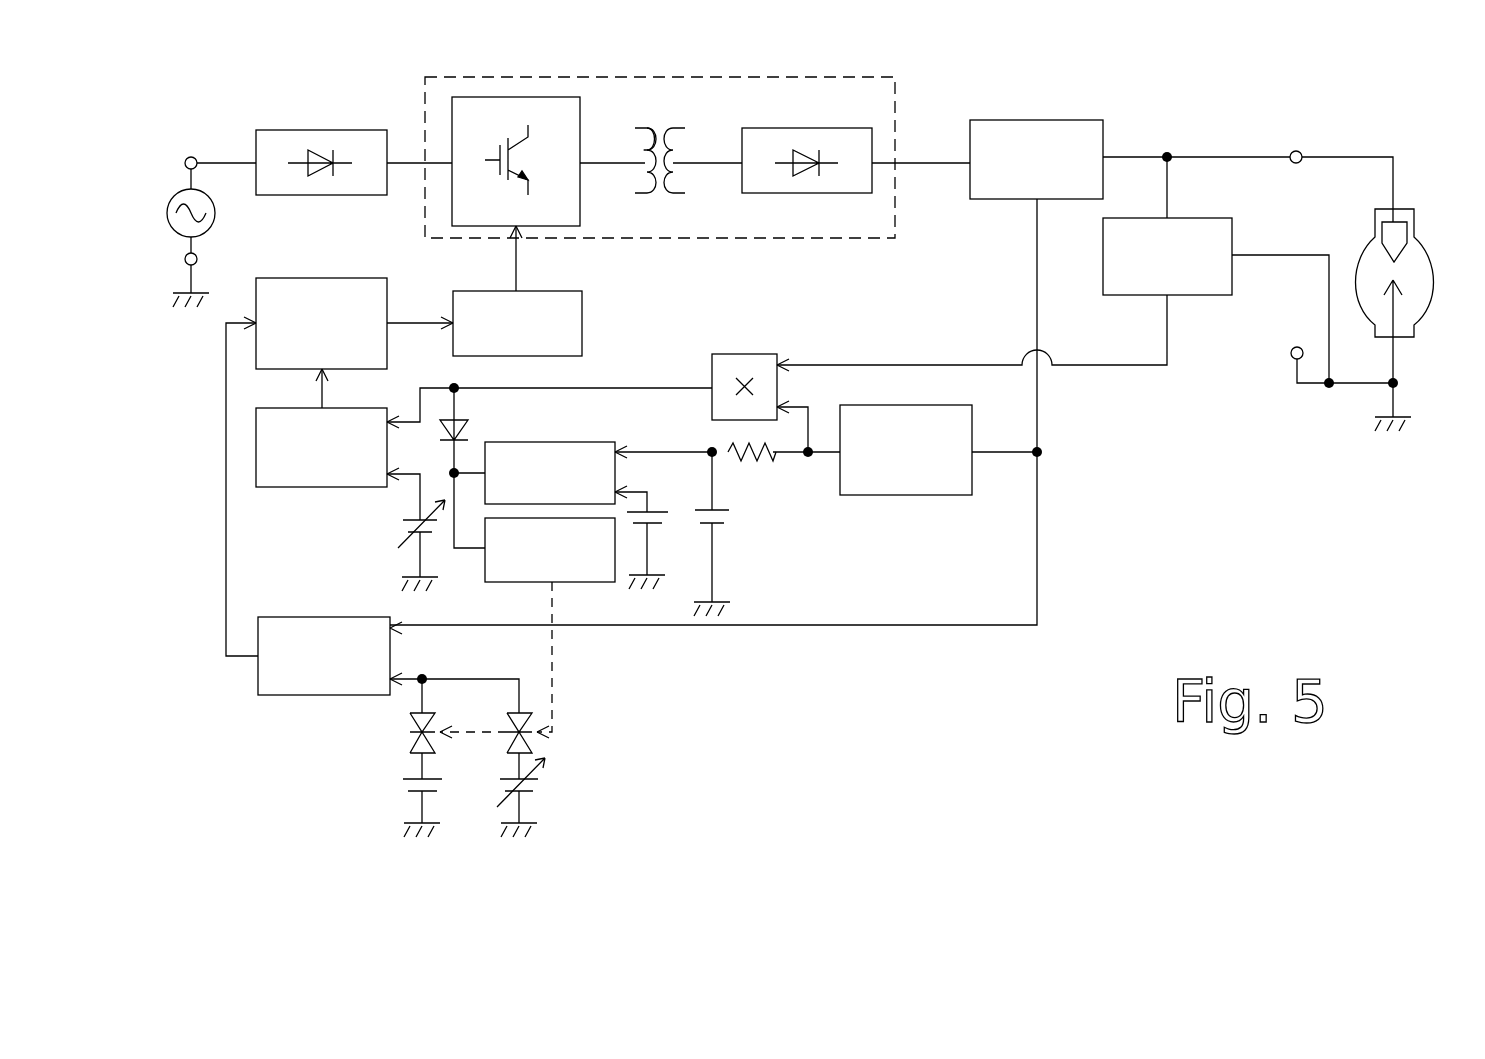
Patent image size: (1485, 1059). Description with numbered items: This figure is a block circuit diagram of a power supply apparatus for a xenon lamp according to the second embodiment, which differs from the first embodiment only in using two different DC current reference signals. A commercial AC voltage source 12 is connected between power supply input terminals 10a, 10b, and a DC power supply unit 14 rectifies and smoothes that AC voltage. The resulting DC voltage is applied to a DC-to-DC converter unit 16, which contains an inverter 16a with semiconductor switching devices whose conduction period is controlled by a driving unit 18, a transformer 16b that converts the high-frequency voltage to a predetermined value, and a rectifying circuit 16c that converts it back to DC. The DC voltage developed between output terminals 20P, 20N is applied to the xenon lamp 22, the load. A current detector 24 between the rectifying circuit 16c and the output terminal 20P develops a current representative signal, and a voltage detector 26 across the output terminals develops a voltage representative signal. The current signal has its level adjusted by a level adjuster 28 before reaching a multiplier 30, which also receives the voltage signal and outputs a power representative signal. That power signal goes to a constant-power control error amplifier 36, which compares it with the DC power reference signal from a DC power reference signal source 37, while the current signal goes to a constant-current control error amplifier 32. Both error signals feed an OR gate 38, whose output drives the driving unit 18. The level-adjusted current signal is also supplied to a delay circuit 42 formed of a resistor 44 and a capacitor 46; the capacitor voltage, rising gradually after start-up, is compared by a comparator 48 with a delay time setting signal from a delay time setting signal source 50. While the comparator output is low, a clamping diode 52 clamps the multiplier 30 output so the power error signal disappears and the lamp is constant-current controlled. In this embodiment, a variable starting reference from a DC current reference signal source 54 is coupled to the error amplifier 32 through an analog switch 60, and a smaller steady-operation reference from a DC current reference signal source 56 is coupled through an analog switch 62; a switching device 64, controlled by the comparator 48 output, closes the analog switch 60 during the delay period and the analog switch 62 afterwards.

The power supply input terminal 10a is at (195, 158).
The power supply input terminal 10b is at (198, 258).
The commercial AC voltage source 12 is at (210, 218).
The DC power supply unit 14 is at (283, 140).
The DC-to-DC converter unit 16 is at (635, 98).
The inverter 16a is at (486, 103).
The transformer 16b is at (660, 186).
The rectifying circuit 16c is at (772, 135).
The driving unit 18 is at (583, 308).
The output terminal 20P is at (1299, 150).
The output terminal 20N is at (1297, 347).
The xenon lamp 22 is at (1420, 272).
The current detector 24 is at (992, 128).
The voltage detector 26 is at (1196, 226).
The level adjuster 28 is at (962, 438).
The multiplier 30 is at (745, 362).
The constant-current control error amplifier 32 is at (280, 635).
The constant-power control error amplifier 36 is at (268, 448).
The DC power reference signal source 37 is at (400, 522).
The OR gate 38 is at (313, 285).
The delay circuit 42 is at (772, 505).
The resistor 44 is at (773, 455).
The capacitor 46 is at (725, 517).
The comparator 48 is at (522, 446).
The delay time setting signal source 50 is at (656, 512).
The clamping diode 52 is at (465, 420).
The DC current reference signal source 54 is at (540, 782).
The DC current reference signal source 56 is at (408, 787).
The analog switch 60 is at (530, 715).
The analog switch 62 is at (412, 720).
The switching device 64 is at (604, 582).